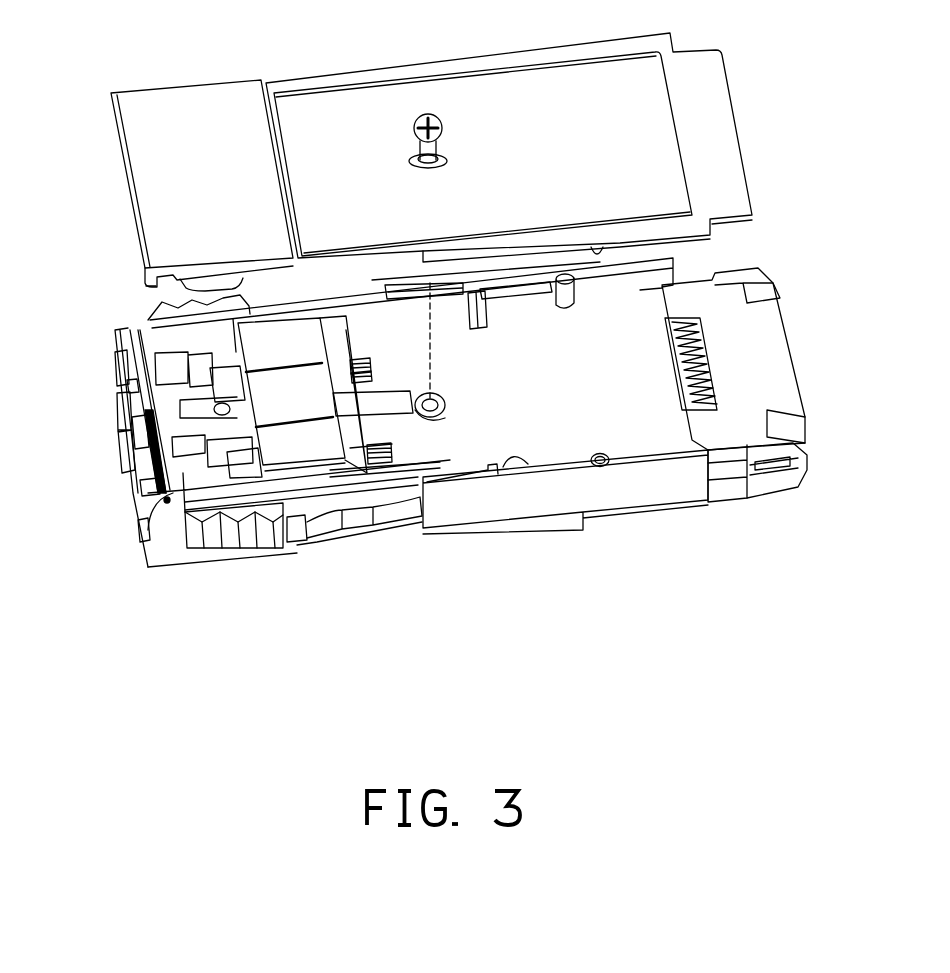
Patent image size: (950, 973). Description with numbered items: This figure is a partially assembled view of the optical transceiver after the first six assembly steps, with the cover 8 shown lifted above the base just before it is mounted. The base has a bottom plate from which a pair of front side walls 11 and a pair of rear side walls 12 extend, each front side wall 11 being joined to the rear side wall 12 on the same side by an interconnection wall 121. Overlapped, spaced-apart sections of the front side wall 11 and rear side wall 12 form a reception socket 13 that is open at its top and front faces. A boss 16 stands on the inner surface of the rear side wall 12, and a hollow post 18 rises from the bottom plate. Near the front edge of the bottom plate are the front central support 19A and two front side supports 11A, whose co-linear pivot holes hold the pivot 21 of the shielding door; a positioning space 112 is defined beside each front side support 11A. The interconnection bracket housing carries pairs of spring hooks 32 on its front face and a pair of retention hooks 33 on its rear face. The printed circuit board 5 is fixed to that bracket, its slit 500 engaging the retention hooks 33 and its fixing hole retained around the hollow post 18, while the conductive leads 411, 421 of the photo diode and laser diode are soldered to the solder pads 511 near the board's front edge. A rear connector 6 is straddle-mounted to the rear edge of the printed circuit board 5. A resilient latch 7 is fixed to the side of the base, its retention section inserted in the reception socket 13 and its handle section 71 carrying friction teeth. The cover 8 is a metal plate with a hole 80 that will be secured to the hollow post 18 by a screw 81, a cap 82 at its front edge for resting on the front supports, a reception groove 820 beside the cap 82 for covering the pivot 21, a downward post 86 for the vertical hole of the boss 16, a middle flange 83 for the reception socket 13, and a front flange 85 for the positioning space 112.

The printed circuit board 5 is at (375, 426).
The rear connector 6 is at (800, 343).
The resilient latch 7 is at (303, 576).
The cover 8 is at (427, 160).
The front side wall 11 is at (155, 492).
The front side support 11A is at (122, 355).
The rear side wall 12 is at (592, 492).
The reception socket 13 is at (440, 476).
The boss 16 is at (567, 304).
The hollow post 18 is at (442, 396).
The front central support 19A is at (140, 447).
The pivot 21 is at (130, 385).
The spring hook 32 is at (147, 537).
The retention hook 33 is at (432, 390).
The handle section 71 is at (242, 545).
The hole 80 is at (450, 160).
The screw 81 is at (440, 115).
The cap 82 is at (655, 138).
The middle flange 83 is at (420, 262).
The front flange 85 is at (246, 277).
The post 86 is at (607, 250).
The positioning space 112 is at (167, 337).
The interconnection wall 121 is at (492, 290).
The conductive leads 411 is at (365, 360).
The conductive leads 421 is at (392, 447).
The slit 500 is at (443, 418).
The solder pads 511 is at (365, 377).
The reception groove 820 is at (146, 285).